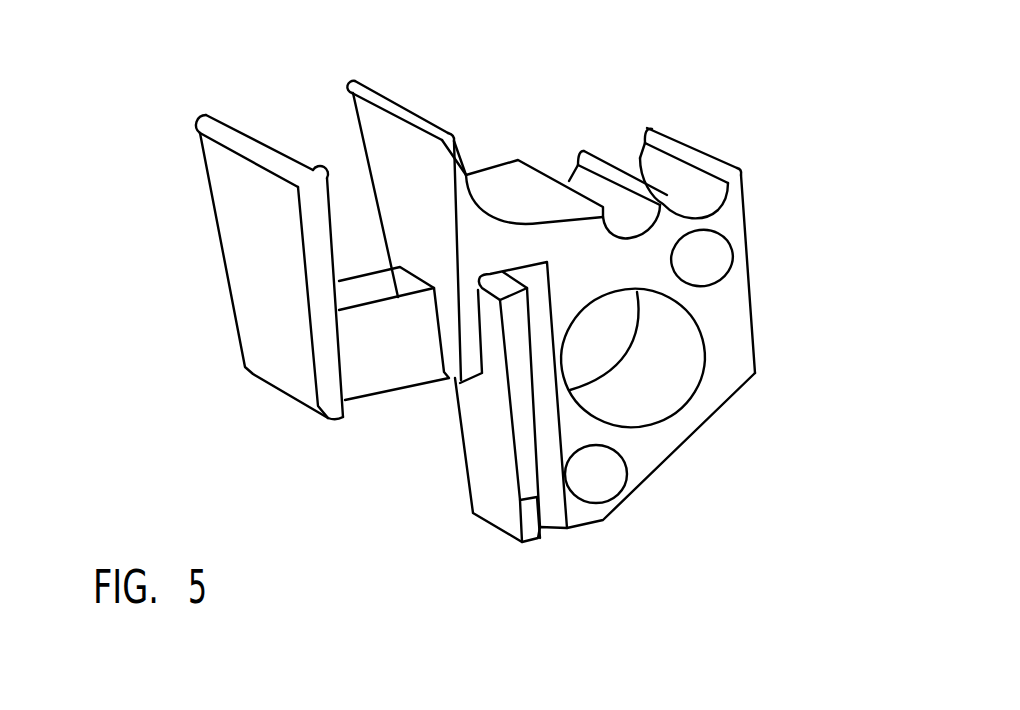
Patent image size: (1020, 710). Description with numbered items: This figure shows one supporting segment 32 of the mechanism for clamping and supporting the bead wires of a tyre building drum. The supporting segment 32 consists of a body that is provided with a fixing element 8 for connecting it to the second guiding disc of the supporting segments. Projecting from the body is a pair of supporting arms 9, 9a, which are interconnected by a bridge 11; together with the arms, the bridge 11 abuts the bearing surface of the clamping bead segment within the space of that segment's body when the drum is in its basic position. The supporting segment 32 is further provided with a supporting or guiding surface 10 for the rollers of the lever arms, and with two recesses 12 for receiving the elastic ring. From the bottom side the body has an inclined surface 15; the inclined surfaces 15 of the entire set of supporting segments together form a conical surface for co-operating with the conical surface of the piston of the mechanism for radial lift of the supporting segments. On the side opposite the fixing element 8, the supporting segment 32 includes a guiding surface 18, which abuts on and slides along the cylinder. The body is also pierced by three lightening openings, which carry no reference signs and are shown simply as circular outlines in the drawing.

The supporting arm 9 is at (258, 235).
The bridge 11 is at (378, 347).
The fixing element 8 is at (525, 482).
The supporting arm 9a is at (458, 178).
The supporting (guiding) surface 10 is at (505, 201).
The recesses 12 is at (683, 182).
The inclined surface 15 is at (687, 440).
The guiding surface 18 is at (750, 272).
The supporting segment 32 is at (180, 430).